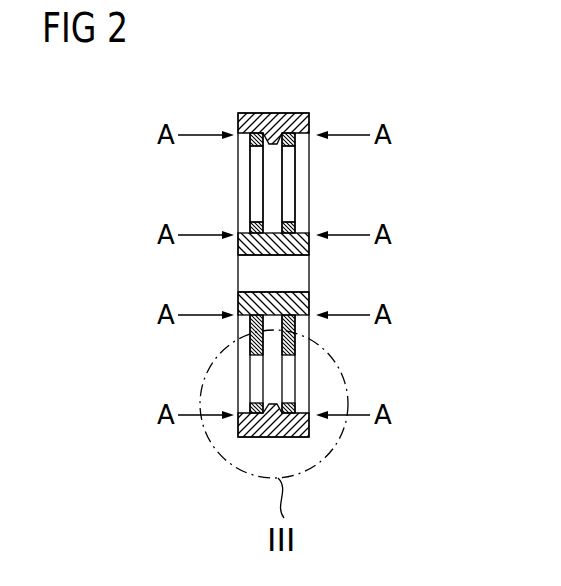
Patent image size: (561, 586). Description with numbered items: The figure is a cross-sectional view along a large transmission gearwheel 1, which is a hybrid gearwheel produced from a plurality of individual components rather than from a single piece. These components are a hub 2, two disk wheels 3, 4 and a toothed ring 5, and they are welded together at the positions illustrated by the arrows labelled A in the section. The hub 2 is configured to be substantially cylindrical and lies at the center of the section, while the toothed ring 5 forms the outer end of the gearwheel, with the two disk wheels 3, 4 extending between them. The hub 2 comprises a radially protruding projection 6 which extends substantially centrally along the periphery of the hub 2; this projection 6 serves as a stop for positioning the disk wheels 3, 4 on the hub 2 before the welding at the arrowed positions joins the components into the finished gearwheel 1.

The large transmission gearwheel 1 is at (325, 235).
The hub 2 is at (305, 245).
The disk wheel 3 is at (260, 183).
The disk wheel 4 is at (287, 184).
The toothed ring 5 is at (281, 118).
The radially protruding projection 6 is at (268, 324).